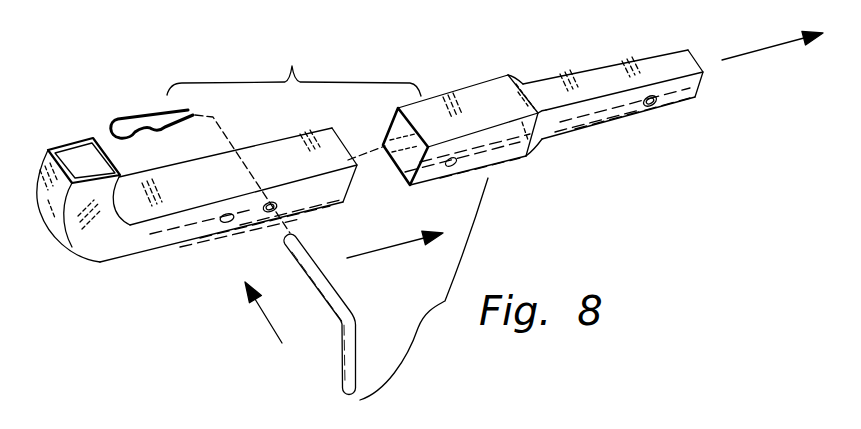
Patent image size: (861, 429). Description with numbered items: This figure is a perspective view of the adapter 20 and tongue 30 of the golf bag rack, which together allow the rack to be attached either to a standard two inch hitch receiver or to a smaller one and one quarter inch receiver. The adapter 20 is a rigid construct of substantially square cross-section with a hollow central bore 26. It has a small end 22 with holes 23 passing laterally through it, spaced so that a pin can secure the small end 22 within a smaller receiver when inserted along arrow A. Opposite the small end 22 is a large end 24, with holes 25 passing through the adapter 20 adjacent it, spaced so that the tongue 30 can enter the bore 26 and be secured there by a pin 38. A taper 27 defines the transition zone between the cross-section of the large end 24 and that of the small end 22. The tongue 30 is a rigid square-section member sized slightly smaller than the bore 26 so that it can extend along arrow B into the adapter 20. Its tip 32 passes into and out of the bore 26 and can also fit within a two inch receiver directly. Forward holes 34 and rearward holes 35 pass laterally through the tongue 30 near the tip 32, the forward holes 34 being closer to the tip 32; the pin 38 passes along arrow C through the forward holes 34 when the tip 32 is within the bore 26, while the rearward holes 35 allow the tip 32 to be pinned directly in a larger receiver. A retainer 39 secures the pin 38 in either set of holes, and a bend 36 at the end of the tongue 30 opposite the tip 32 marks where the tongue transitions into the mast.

The adapter 20 is at (519, 140).
The small end 22 is at (640, 68).
The holes 23 is at (668, 122).
The large end 24 is at (476, 93).
The holes 25 is at (454, 167).
The hollow central bore 26 is at (400, 130).
The taper 27 is at (527, 84).
The tongue 30 is at (206, 223).
The tip 32 is at (305, 148).
The forward holes 34 is at (271, 211).
The rearward holes 35 is at (228, 222).
The bend 36 is at (85, 252).
The pin 38 is at (337, 315).
The retainer 39 is at (124, 119).
The arrow A is at (780, 44).
The arrow B is at (400, 244).
The arrow C is at (262, 312).